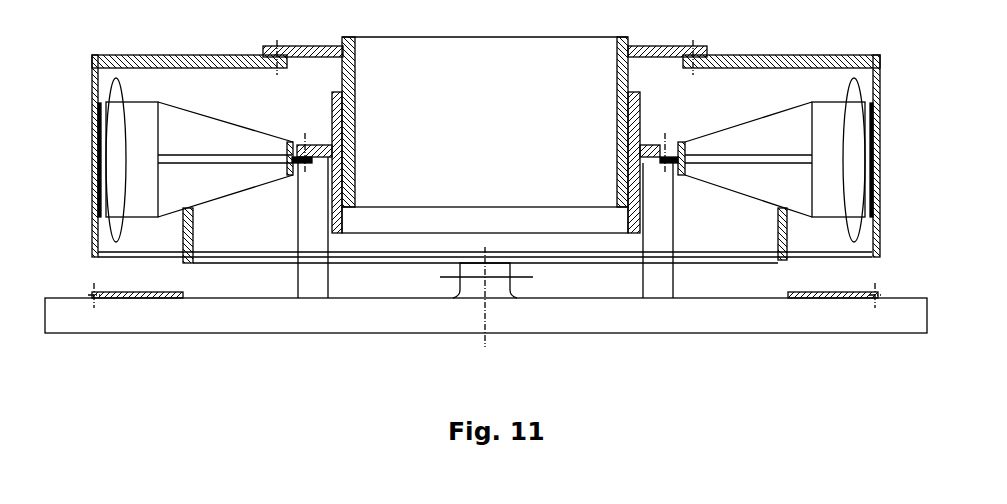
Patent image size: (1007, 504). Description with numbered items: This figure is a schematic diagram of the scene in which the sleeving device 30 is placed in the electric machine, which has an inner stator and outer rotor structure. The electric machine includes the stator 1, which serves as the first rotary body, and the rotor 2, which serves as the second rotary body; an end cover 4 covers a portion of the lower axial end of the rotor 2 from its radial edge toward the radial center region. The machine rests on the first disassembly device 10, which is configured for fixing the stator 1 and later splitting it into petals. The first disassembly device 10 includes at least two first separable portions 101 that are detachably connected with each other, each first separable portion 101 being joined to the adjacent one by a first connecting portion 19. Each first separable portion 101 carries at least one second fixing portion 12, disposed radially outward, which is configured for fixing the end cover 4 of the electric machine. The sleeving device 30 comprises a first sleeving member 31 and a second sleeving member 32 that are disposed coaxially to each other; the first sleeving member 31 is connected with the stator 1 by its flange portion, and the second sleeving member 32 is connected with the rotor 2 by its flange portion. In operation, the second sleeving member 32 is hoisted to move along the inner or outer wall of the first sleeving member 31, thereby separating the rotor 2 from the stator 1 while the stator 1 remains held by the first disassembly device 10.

The stator 1 is at (193, 233).
The rotor 2 is at (92, 147).
The end cover 4 is at (177, 293).
The first disassembly device 10 is at (393, 337).
The second fixing portion 12 is at (93, 292).
The first connecting portion 19 is at (500, 292).
The sleeving device 30 is at (485, 135).
The first sleeving member 31 is at (332, 127).
The second sleeving member 32 is at (347, 187).
The first separable portion 101 is at (247, 322).